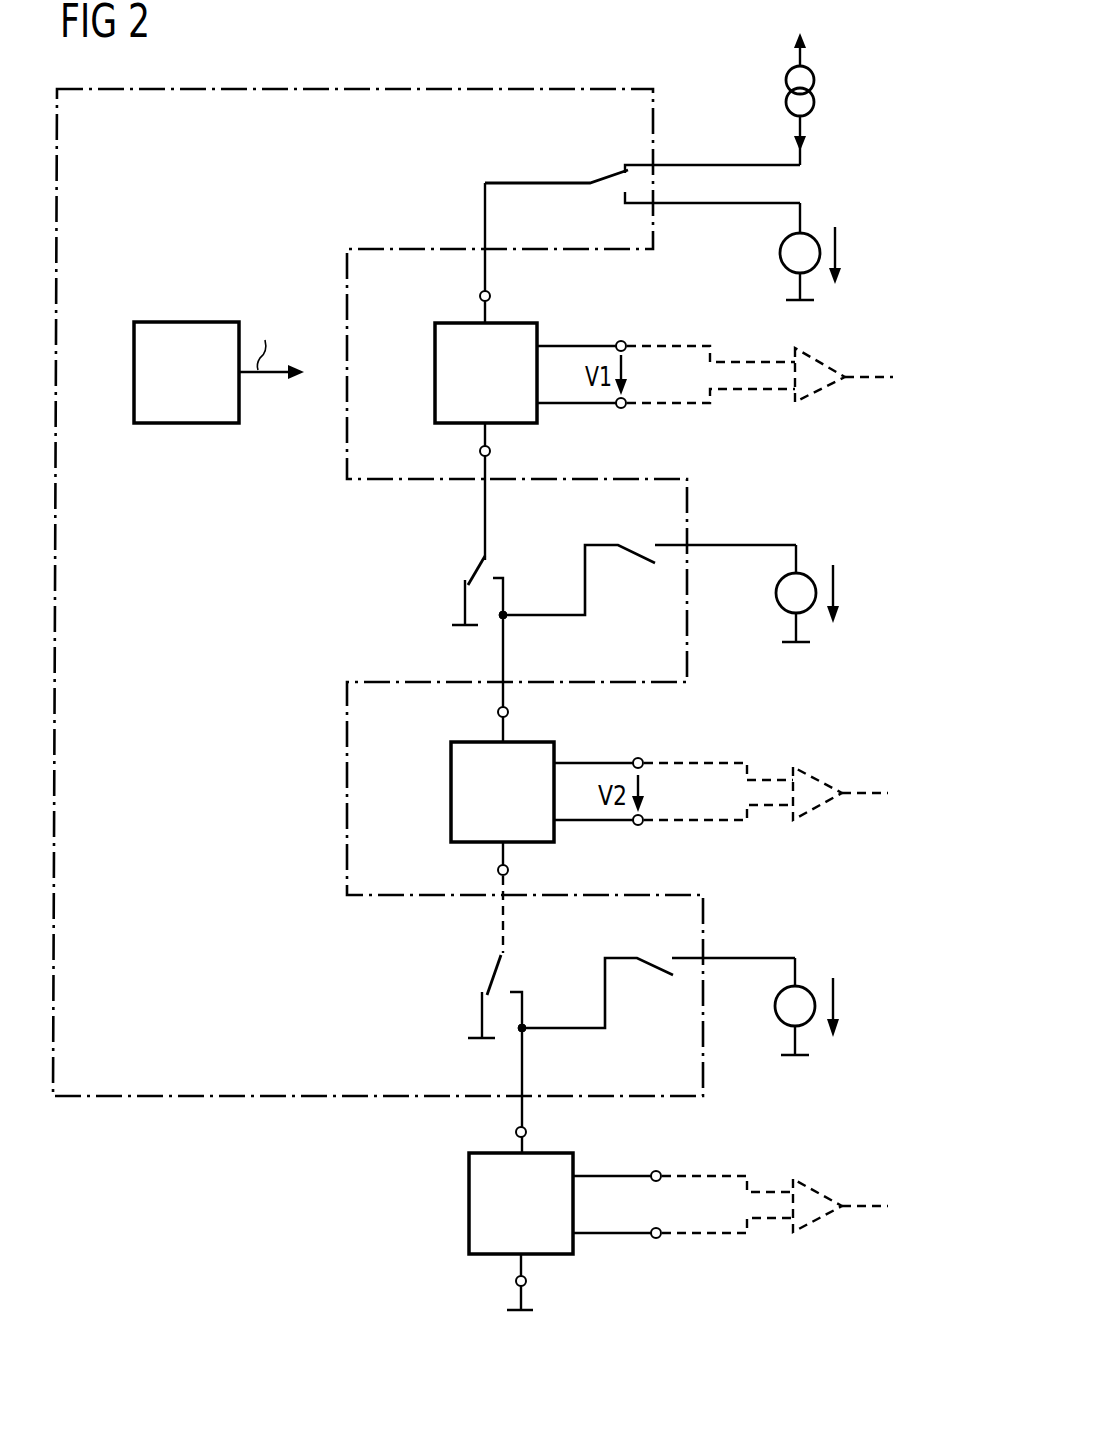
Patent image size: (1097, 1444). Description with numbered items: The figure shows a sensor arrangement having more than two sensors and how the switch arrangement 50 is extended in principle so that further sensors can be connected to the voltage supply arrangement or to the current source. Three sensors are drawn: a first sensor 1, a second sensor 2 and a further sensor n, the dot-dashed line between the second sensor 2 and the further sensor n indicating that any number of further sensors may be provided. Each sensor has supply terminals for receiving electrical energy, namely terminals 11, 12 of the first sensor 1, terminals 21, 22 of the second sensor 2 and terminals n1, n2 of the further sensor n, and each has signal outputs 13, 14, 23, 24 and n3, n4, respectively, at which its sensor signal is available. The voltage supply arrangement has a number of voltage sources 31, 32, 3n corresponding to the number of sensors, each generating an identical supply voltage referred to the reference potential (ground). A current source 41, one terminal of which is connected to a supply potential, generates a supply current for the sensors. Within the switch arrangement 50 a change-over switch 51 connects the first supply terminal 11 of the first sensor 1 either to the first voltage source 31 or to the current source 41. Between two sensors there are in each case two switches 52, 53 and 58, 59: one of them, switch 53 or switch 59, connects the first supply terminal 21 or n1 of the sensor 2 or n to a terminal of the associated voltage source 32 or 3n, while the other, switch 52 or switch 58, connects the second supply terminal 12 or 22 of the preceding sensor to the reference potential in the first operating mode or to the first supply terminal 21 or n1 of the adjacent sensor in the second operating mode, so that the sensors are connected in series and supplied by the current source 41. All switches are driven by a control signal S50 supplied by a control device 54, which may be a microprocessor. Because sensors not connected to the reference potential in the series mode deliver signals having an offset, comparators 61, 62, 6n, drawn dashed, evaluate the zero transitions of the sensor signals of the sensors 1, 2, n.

The switch arrangement 50 is at (228, 1097).
The control device 54 is at (188, 322).
The control signal S50 is at (605, 195).
The current source 41 is at (817, 80).
The switch 51 is at (618, 173).
The first voltage source 31 is at (778, 255).
The first sensor 1 is at (435, 373).
The first supply terminal 11 is at (491, 296).
The second supply terminal 12 is at (491, 451).
The signal output 13 is at (622, 340).
The signal output 14 is at (622, 410).
The comparator 61 is at (822, 387).
The switch 52 is at (478, 565).
The switch 53 is at (639, 560).
The second voltage source 32 is at (776, 594).
The second sensor 2 is at (451, 793).
The first supply terminal 21 is at (509, 712).
The second supply terminal 22 is at (509, 870).
The signal output 23 is at (639, 757).
The signal output 24 is at (639, 826).
The comparator 62 is at (820, 805).
The switch 58 is at (495, 978).
The switch 59 is at (657, 975).
The voltage source 3n is at (775, 1008).
The further sensor n is at (469, 1203).
The first supply terminal n1 is at (527, 1132).
The second supply terminal n2 is at (527, 1281).
The signal output n3 is at (656, 1170).
The signal output n4 is at (656, 1240).
The comparator 6n is at (820, 1218).